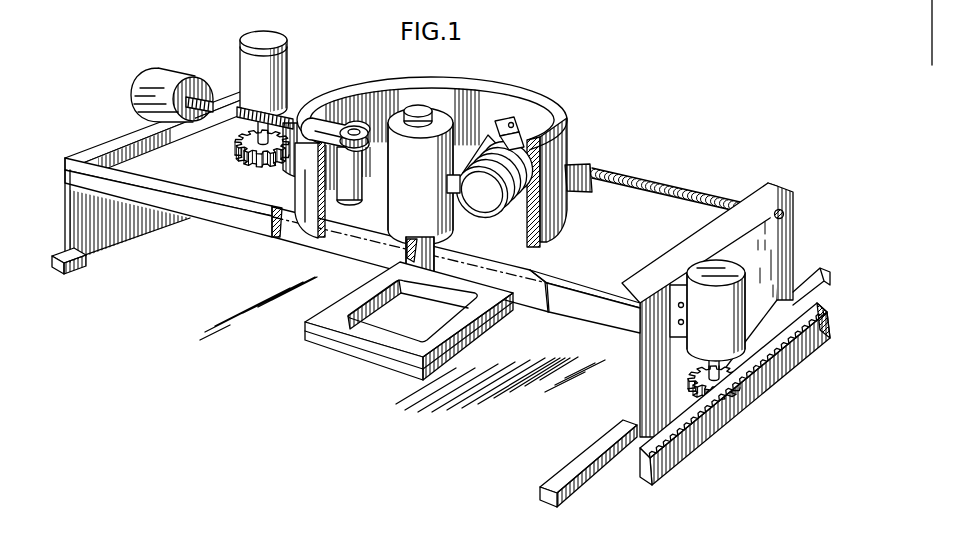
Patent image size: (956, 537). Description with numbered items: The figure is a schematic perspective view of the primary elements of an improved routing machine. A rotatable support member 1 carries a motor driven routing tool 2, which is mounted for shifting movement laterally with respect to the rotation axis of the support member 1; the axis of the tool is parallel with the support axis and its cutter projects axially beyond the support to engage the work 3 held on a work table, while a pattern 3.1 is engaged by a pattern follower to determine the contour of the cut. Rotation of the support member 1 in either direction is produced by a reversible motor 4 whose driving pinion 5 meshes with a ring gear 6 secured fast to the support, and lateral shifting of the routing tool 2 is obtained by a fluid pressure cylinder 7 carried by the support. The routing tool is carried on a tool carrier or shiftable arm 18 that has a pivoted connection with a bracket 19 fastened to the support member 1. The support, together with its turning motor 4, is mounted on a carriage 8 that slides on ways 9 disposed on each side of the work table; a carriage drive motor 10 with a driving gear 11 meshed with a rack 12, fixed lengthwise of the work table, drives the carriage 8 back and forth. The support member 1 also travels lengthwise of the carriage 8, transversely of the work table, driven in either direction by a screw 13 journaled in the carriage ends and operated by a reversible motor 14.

The rotatable support member 1 is at (547, 98).
The motor driven routing tool 2 is at (427, 108).
The work 3 is at (402, 333).
The pattern 3.1 is at (368, 333).
The reversible motor 4 is at (287, 67).
The driving pinion 5 is at (258, 167).
The ring gear 6 is at (306, 190).
The fluid pressure cylinder 7 is at (488, 208).
The carriage 8 is at (660, 282).
The ways 9 is at (588, 452).
The carriage drive motor 10 is at (745, 290).
The driving gear 11 is at (714, 400).
The rack 12 is at (753, 385).
The screw 13 is at (640, 177).
The reversible motor 14 is at (137, 83).
The tool carrier or shiftable arm 18 is at (382, 182).
The bracket 19 is at (330, 122).